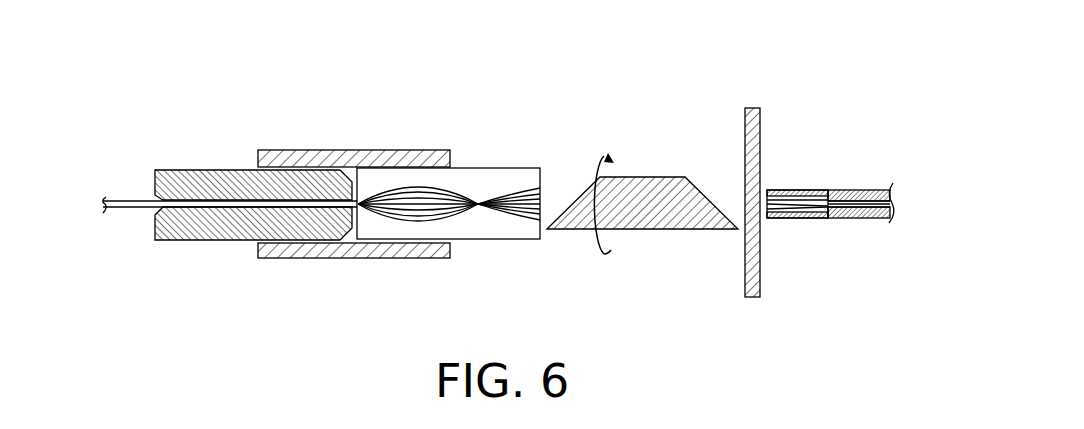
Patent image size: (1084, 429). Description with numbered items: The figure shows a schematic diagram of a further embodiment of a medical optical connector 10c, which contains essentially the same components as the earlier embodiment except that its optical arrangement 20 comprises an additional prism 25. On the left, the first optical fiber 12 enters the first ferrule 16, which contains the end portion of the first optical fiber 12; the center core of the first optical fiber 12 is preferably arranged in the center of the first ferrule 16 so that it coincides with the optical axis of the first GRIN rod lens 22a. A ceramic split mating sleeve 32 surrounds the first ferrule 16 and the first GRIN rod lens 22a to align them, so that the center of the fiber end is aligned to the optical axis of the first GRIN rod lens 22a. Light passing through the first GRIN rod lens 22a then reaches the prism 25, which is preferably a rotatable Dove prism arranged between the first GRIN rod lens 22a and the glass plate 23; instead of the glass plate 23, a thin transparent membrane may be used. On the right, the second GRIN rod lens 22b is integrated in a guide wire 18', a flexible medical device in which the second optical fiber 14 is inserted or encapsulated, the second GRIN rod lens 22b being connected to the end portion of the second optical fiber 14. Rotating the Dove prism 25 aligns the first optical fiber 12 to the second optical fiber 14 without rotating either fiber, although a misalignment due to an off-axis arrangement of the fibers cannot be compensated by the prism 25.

The medical optical connector 10c is at (777, 81).
The first optical fiber 12 is at (121, 212).
The second optical fiber 14 is at (838, 203).
The first ferrule 16 is at (213, 230).
The guide wire 18' is at (861, 247).
The optical arrangement 20 is at (481, 155).
The first GRIN rod lens 22a is at (485, 240).
The second GRIN rod lens 22b is at (812, 218).
The glass plate 23 is at (753, 298).
The prism 25 is at (649, 192).
The ceramic split mating sleeve 32 is at (340, 258).